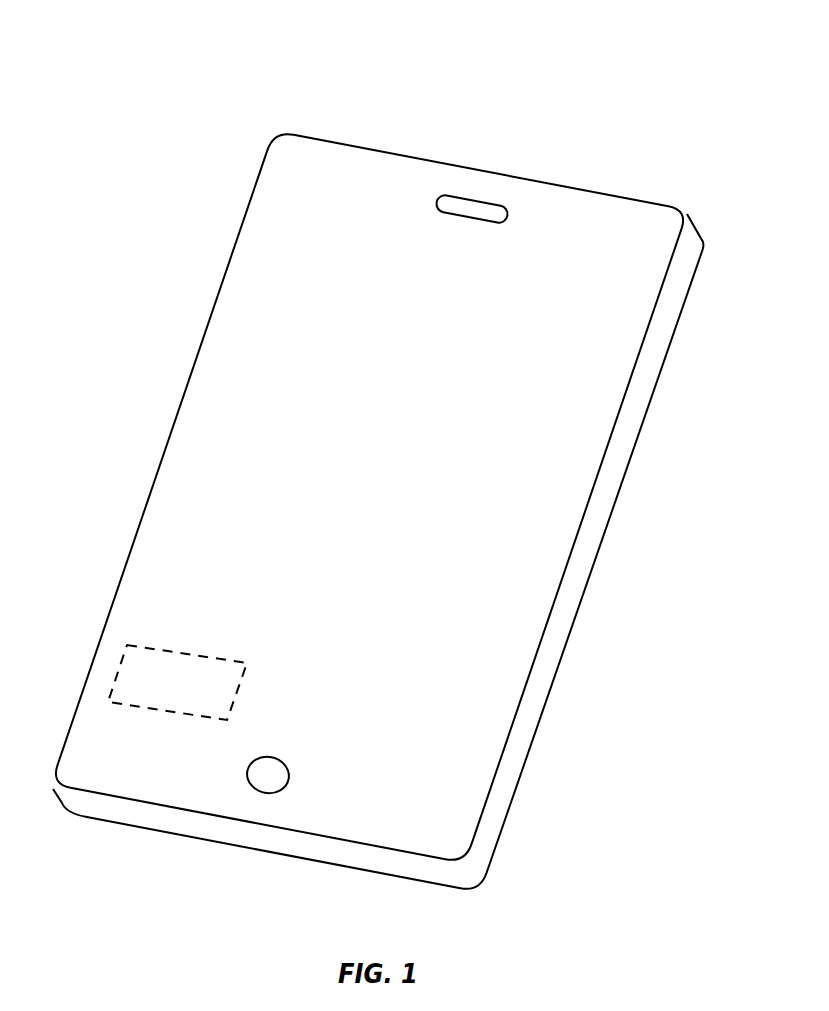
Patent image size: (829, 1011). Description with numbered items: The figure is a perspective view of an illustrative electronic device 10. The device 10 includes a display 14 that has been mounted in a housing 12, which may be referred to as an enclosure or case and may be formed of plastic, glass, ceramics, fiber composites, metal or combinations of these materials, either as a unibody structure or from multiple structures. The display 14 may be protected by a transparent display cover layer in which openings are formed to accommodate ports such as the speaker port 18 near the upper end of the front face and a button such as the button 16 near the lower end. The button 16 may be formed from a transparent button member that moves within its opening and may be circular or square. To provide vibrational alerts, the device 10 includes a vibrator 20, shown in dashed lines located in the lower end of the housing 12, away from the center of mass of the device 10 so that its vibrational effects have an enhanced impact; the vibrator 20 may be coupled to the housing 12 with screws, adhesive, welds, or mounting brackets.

The electronic device 10 is at (731, 81).
The housing 12 is at (676, 333).
The display 14 is at (257, 368).
The button 16 is at (264, 793).
The speaker port 18 is at (457, 198).
The vibrator 20 is at (118, 674).